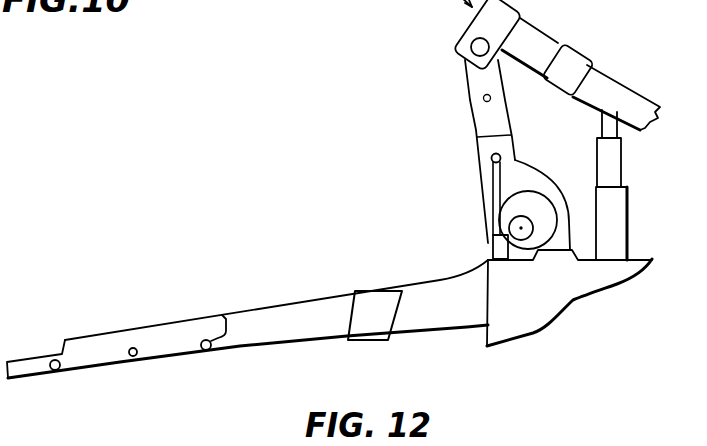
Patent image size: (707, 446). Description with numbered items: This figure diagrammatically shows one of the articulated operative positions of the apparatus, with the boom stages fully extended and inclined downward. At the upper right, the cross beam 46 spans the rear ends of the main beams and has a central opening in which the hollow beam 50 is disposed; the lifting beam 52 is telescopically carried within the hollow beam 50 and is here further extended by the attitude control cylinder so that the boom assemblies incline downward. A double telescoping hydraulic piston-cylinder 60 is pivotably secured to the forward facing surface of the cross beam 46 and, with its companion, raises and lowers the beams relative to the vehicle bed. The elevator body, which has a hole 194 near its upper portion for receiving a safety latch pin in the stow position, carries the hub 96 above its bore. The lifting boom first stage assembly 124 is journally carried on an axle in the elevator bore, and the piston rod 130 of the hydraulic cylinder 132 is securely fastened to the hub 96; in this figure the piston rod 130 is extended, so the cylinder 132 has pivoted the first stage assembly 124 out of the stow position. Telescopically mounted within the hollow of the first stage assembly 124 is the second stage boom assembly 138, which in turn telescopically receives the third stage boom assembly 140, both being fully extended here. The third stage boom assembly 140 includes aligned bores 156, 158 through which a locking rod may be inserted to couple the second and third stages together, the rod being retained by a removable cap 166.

The cross beam 46 is at (583, 52).
The hollow beam 50 is at (630, 84).
The lifting beam 52 is at (540, 28).
The hydraulic piston-cylinder 60 is at (627, 207).
The hub 96 is at (501, 154).
The lifting boom first stage assembly 124 is at (434, 322).
The piston rod 130 is at (488, 188).
The hydraulic cylinder 132 is at (495, 251).
The second stage boom assembly 138 is at (268, 305).
The third stage boom assembly 140 is at (19, 355).
The bore 156 is at (52, 370).
The bore 158 is at (131, 356).
The cap 166 is at (202, 350).
The hole 194 is at (482, 97).